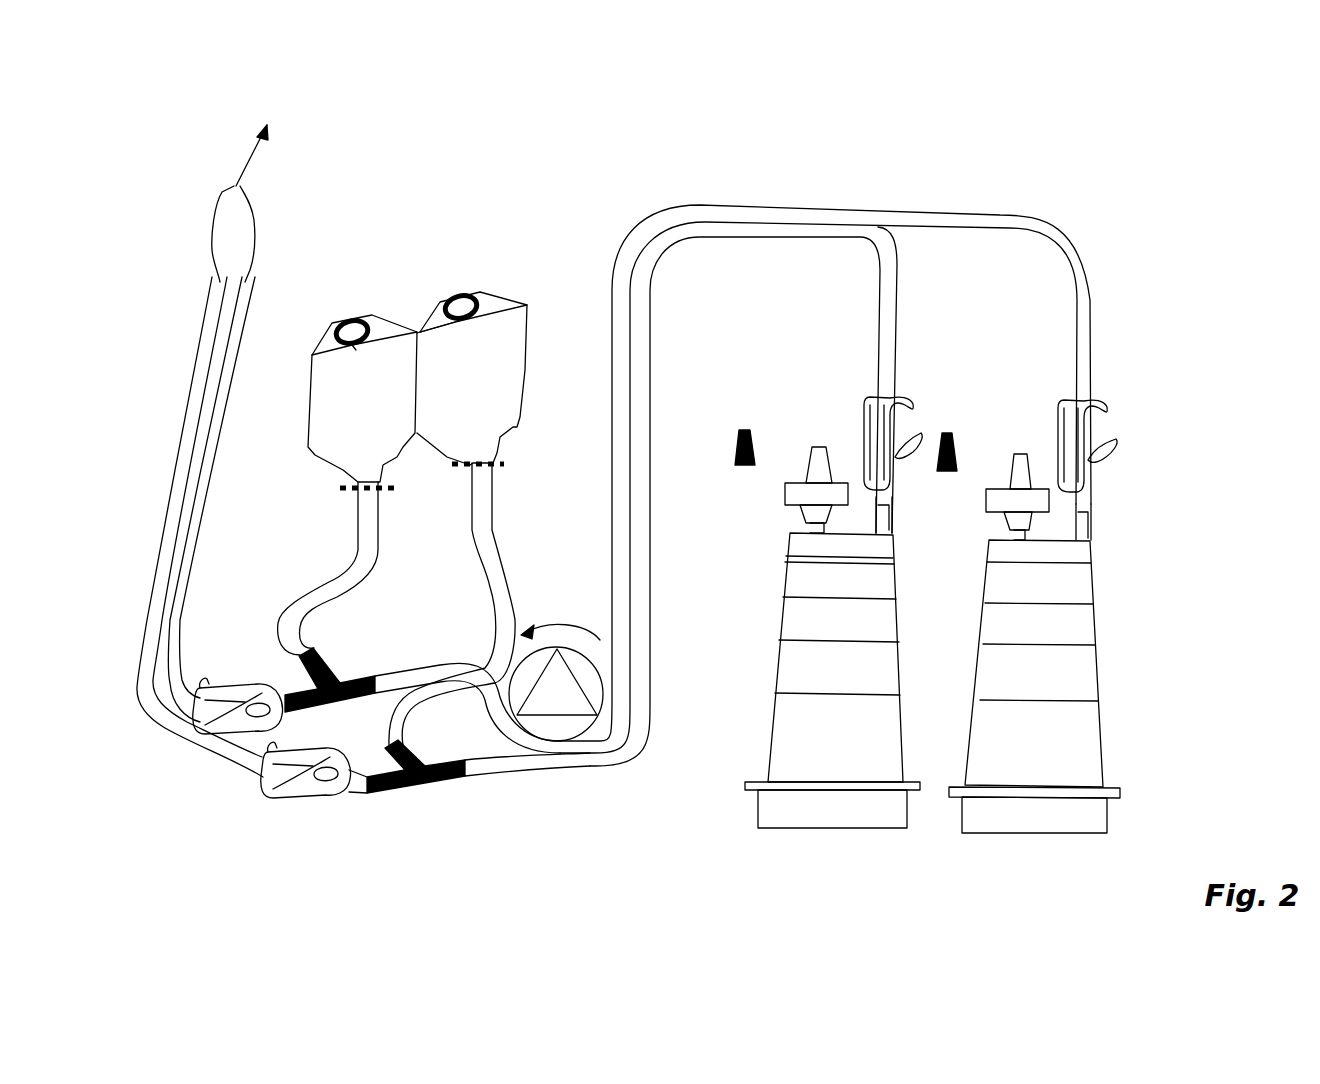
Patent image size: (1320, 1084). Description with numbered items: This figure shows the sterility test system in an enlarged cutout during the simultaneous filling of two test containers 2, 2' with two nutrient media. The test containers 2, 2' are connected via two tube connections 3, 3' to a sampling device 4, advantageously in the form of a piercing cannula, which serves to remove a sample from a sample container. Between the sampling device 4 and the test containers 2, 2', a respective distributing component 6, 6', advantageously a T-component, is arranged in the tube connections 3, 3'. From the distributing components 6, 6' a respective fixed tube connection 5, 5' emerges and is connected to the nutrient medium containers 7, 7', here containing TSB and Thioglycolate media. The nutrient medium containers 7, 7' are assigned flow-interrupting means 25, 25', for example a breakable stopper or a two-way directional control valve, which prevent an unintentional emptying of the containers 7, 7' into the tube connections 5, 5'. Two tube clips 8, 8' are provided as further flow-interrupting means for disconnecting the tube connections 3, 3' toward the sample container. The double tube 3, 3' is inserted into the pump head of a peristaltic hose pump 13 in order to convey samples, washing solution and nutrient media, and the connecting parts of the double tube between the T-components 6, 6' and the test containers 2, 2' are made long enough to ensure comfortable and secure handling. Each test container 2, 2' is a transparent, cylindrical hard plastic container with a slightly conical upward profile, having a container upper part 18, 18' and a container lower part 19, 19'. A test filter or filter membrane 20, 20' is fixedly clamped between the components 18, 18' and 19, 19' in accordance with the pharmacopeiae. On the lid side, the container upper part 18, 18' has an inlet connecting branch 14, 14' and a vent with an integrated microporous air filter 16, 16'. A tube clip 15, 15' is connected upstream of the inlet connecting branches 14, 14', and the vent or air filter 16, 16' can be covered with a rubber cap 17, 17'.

The test container 2 is at (1066, 611).
The test container 2' is at (819, 604).
The tube connection 3 is at (209, 492).
The tube connection 3' is at (200, 527).
The sampling device 4 is at (250, 160).
The fixed tube connection 5 is at (321, 568).
The fixed tube connection 5' is at (472, 604).
The distributing component 6 is at (330, 670).
The distributing component 6' is at (424, 787).
The nutrient medium container 7 is at (362, 349).
The nutrient medium container 7' is at (472, 339).
The tube clip 8 is at (223, 727).
The tube clip 8' is at (307, 798).
The peristaltic hose pump 13 is at (557, 727).
The inlet connecting branch 14 is at (1126, 508).
The inlet connecting branch 14' is at (915, 534).
The tube clip 15 is at (1127, 446).
The tube clip 15' is at (906, 458).
The air filter 16 is at (1015, 458).
The air filter 16' is at (805, 448).
The rubber cap 17 is at (953, 413).
The rubber cap 17' is at (730, 414).
The container upper part 18 is at (1079, 631).
The container upper part 18' is at (794, 625).
The container lower part 19 is at (1068, 832).
The container lower part 19' is at (796, 817).
The filter membrane 20 is at (1062, 769).
The filter membrane 20' is at (801, 758).
The flow-interrupting means 25 is at (326, 483).
The flow-interrupting means 25' is at (514, 445).